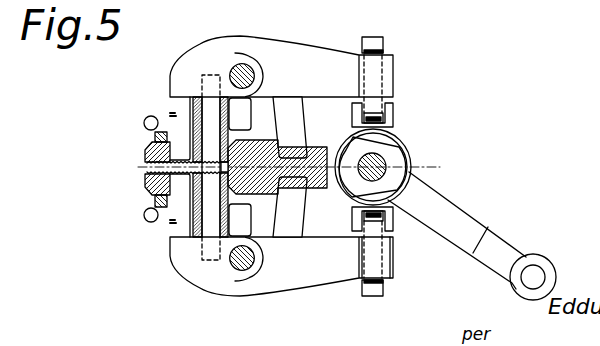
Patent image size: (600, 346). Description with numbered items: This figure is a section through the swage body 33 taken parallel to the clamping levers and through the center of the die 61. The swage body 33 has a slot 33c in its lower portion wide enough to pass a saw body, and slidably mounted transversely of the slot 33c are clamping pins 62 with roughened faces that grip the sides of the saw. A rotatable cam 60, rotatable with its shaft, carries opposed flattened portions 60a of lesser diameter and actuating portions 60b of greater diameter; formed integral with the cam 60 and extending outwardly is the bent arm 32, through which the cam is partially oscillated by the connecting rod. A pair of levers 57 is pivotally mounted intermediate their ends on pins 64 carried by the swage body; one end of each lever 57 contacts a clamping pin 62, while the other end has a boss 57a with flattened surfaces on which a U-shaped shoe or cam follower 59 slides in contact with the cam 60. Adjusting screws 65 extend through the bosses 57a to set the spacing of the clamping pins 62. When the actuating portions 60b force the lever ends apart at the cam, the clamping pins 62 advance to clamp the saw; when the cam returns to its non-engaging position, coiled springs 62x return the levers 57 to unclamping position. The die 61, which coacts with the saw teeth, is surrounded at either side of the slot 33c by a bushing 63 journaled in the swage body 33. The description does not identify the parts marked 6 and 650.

The threaded shaft 6 is at (146, 170).
The bent arm 32 is at (452, 207).
The swage body 33 is at (144, 144).
The slot 33c is at (147, 171).
The levers 57 is at (298, 45).
The bosses 57a is at (389, 238).
The U-shaped shoes or cam followers 59 is at (397, 112).
The rotatable cam 60 is at (398, 162).
The flattened portions 60a is at (393, 140).
The actuating portions 60b is at (466, 174).
The rotatable die 61 is at (210, 118).
The clamping pins 62 is at (174, 112).
The coiled springs 62x is at (178, 220).
The bushing 63 is at (210, 222).
The pins 64 is at (226, 52).
The adjusting screws 65 is at (384, 46).
The hub 650 is at (390, 170).